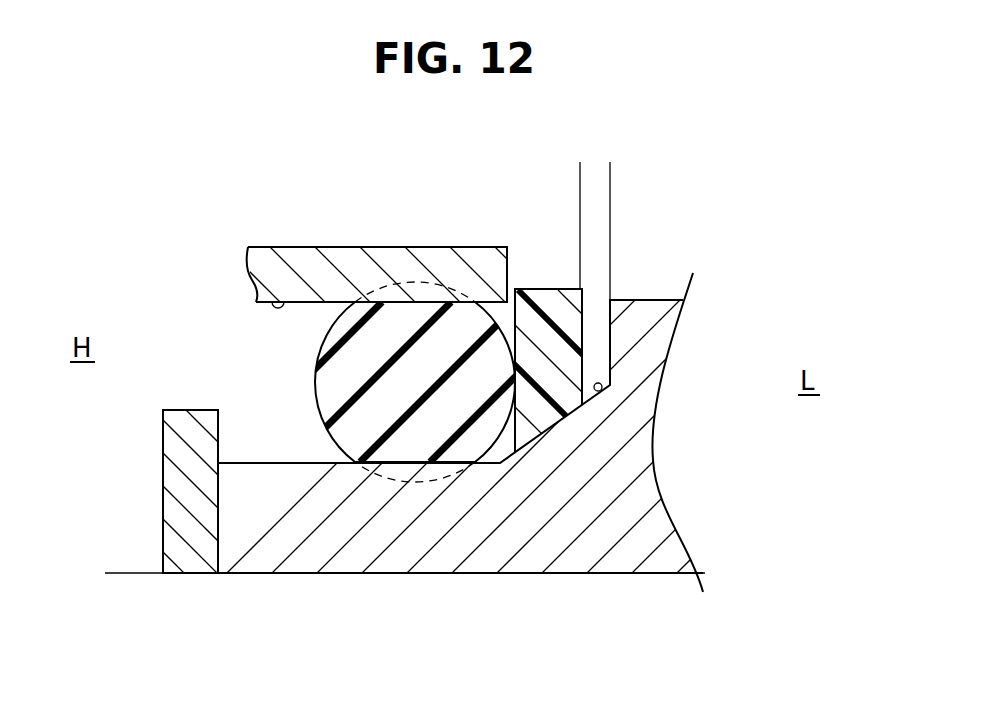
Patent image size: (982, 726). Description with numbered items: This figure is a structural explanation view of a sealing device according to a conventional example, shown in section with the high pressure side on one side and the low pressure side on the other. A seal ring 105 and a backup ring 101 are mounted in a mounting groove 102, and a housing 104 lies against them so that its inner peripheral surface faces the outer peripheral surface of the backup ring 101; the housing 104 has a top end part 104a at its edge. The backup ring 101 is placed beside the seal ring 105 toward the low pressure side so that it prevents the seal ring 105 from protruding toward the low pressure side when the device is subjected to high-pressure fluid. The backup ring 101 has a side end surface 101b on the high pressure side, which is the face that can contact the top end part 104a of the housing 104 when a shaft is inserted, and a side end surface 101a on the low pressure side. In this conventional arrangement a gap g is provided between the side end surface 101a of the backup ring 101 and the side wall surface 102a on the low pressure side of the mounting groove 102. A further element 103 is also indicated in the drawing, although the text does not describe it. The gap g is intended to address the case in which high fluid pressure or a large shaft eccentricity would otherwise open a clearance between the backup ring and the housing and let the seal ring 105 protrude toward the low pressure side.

The backup ring 101 is at (545, 353).
The side end surface at low pressure side 101a is at (588, 333).
The side end surface at high pressure side 101b is at (512, 316).
The mounting groove 102 is at (286, 455).
The side wall surface at low pressure side 102a is at (610, 348).
The corner portion 103 is at (603, 390).
The housing 104 is at (350, 267).
The top end part 104a is at (283, 301).
The seal ring 105 is at (434, 432).
The gap g is at (640, 187).